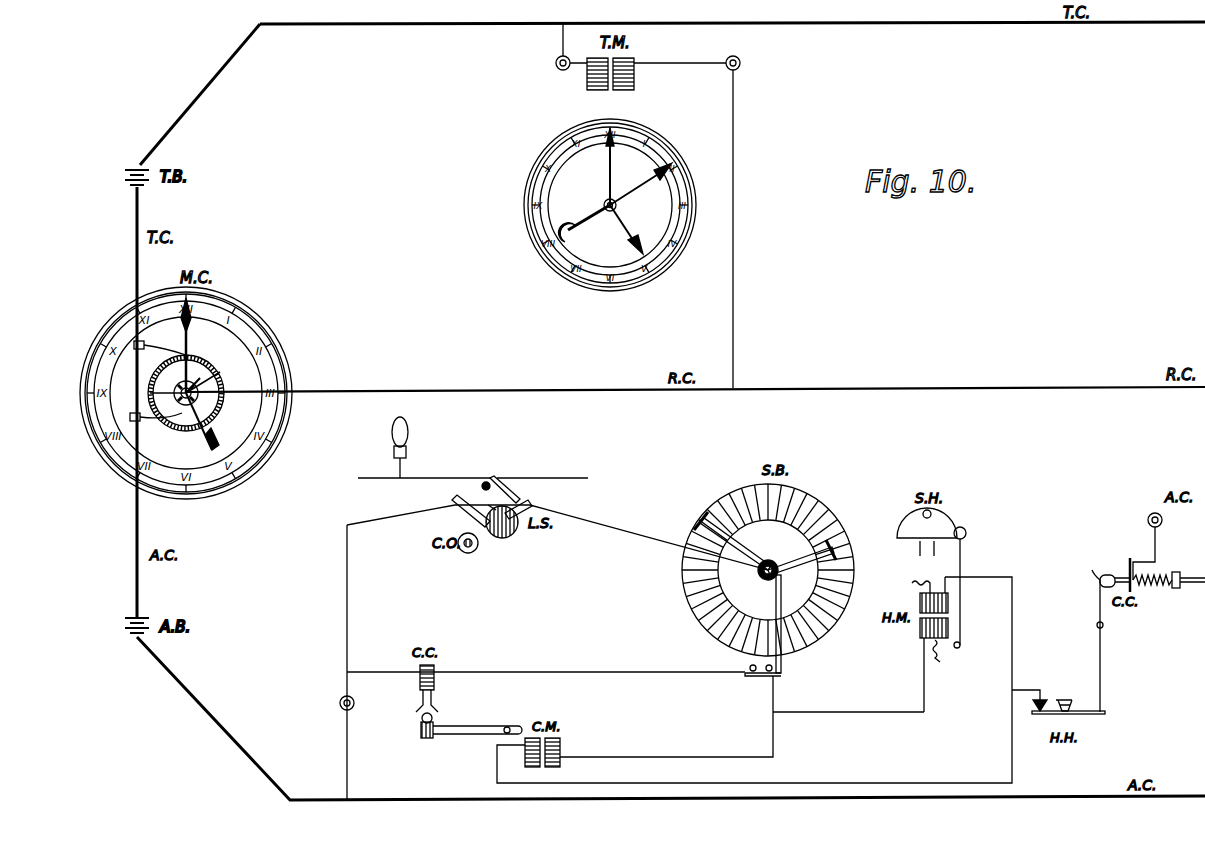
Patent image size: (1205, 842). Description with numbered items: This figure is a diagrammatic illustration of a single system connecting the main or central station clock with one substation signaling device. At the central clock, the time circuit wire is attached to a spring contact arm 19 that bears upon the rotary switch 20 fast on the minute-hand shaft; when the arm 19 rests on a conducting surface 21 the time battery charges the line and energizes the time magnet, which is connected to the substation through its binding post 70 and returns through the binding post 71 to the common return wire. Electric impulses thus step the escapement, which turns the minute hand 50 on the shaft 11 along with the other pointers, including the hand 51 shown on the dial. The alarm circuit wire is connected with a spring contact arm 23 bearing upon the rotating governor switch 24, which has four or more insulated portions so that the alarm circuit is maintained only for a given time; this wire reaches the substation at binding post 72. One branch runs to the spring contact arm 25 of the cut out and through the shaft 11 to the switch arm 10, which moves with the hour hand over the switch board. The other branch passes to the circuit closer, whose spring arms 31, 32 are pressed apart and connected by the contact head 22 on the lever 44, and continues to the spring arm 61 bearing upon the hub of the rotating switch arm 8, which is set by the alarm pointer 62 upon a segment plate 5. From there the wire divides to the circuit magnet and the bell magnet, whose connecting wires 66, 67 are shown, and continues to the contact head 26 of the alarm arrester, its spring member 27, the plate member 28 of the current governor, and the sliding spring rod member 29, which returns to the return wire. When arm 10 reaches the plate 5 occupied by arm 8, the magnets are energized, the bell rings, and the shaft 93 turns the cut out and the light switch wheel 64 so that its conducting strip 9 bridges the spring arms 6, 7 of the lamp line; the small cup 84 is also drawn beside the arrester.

The segmental metal contact plate 5 is at (768, 570).
The spring arm 6 is at (486, 504).
The spring arm 7 is at (520, 492).
The rotating switch arm 8 is at (752, 553).
The conducting strip 9 is at (495, 540).
The switch arm 10 is at (805, 552).
The shaft 11 is at (604, 204).
The spring contact arm 19 is at (165, 345).
The rotary switch 20 is at (199, 380).
The conducting surface 21 is at (139, 387).
The contact head 22 is at (420, 716).
The spring contact arm 23 is at (150, 420).
The rotating governor switch 24 is at (183, 385).
The spring contact arm 25 is at (465, 511).
The contact head 26 is at (1045, 695).
The spring member 27 is at (1080, 714).
The plate member 28 is at (1098, 604).
The sliding spring rod member 29 is at (1190, 590).
The spring arm 31 is at (420, 694).
The spring arm 32 is at (436, 694).
The lever 44 is at (492, 720).
The minute hand 50 is at (609, 168).
The hand 51 is at (632, 222).
The spring arm 61 is at (783, 600).
The alarm pointer 62 is at (641, 184).
The wheel 64 is at (504, 528).
The short wire 66 is at (910, 578).
The short wire 67 is at (938, 662).
The binding post 70 is at (556, 65).
The binding post 71 is at (740, 63).
The binding post 72 is at (339, 703).
The cup contact 84 is at (1073, 695).
The shaft 93 is at (532, 503).